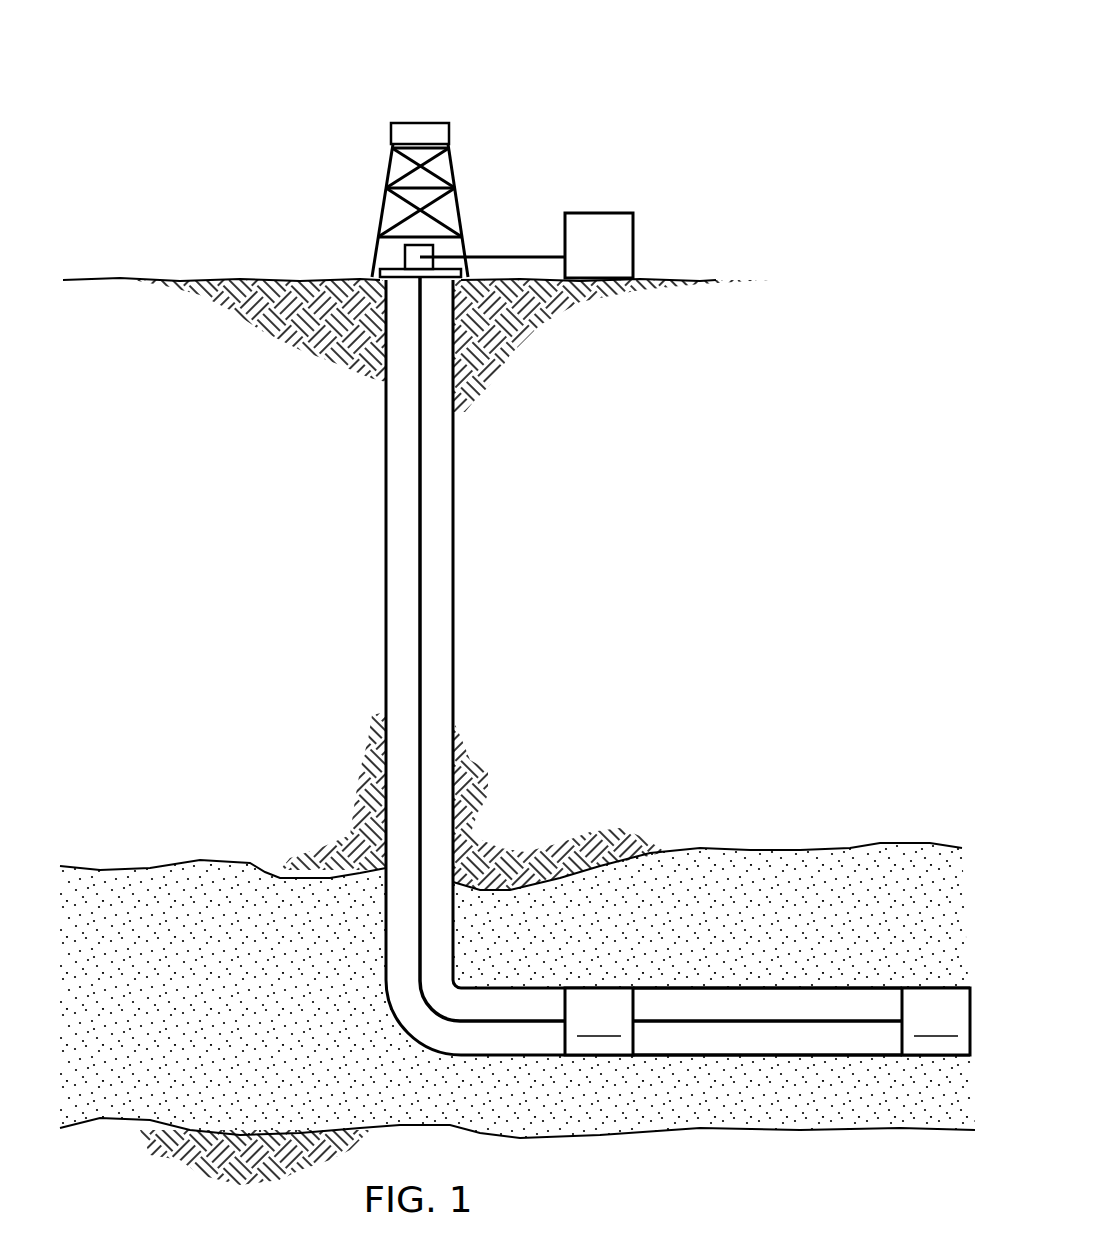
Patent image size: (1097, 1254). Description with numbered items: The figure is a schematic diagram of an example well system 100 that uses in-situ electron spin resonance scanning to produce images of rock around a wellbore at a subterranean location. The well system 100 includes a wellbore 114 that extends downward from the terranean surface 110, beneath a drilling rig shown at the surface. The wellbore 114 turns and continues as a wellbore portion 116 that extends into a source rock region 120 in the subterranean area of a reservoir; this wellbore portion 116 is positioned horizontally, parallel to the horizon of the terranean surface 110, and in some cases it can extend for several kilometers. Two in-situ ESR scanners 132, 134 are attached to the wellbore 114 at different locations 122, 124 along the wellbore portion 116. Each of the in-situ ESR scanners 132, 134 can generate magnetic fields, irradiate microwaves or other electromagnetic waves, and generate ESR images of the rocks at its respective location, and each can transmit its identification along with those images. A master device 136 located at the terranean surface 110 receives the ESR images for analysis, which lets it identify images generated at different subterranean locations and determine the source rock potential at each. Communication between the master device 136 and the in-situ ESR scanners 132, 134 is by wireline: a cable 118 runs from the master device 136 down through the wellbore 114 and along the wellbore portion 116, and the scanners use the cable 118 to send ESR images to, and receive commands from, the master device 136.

The well system 100 is at (304, 82).
The terranean surface 110 is at (265, 280).
The wellbore 114 is at (386, 493).
The wellbore portion 116 is at (733, 990).
The cable 118 is at (421, 625).
The source rock region 120 is at (832, 860).
The location 122 is at (599, 991).
The location 124 is at (936, 991).
The in-situ ESR scanner 132 is at (598, 988).
The in-situ ESR scanner 134 is at (937, 988).
The master device 136 is at (625, 243).